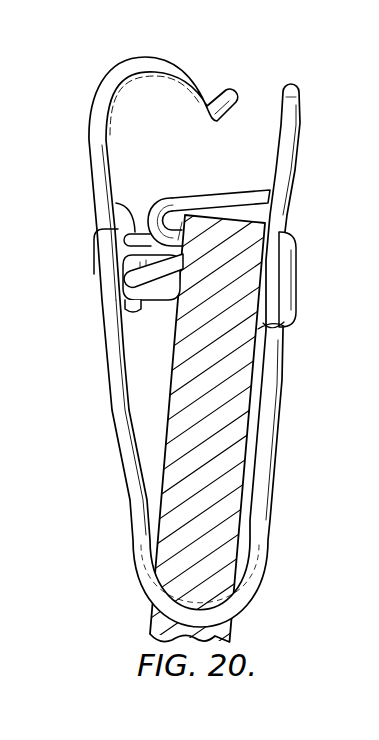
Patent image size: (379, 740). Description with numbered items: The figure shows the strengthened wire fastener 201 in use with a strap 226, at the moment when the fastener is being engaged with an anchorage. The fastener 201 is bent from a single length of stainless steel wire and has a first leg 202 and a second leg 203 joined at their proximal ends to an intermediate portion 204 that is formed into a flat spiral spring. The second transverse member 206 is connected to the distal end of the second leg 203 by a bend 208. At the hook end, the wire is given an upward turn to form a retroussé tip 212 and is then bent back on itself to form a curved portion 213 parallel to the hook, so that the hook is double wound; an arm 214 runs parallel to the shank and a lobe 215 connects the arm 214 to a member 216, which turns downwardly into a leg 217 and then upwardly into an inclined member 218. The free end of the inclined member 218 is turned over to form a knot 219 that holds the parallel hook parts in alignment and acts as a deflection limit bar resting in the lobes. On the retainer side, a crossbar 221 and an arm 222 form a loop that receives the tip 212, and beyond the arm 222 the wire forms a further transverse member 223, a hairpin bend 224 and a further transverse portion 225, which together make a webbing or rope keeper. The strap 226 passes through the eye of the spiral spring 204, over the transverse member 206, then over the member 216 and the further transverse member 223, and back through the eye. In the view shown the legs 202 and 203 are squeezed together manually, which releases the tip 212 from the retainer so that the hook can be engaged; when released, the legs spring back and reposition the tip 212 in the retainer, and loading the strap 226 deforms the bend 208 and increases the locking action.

The fastener 201 is at (189, 350).
The first leg 202 is at (263, 497).
The second leg 203 is at (122, 457).
The intermediate portion 204 is at (242, 538).
The second transverse member 206 is at (116, 203).
The bend 208 is at (92, 250).
The retroussé tip 212 is at (208, 128).
The curved portion 213 is at (152, 64).
The arm 214 is at (94, 136).
The lobe 215 is at (137, 280).
The member 216 is at (128, 262).
The leg 217 is at (283, 292).
The inclined member 218 is at (280, 325).
The knot 219 is at (122, 313).
The crossbar 221 is at (302, 86).
The arm 222 is at (292, 128).
The further transverse member 223 is at (177, 240).
The hairpin bend 224 is at (153, 206).
The further transverse portion 225 is at (238, 200).
The strap 226 is at (220, 635).